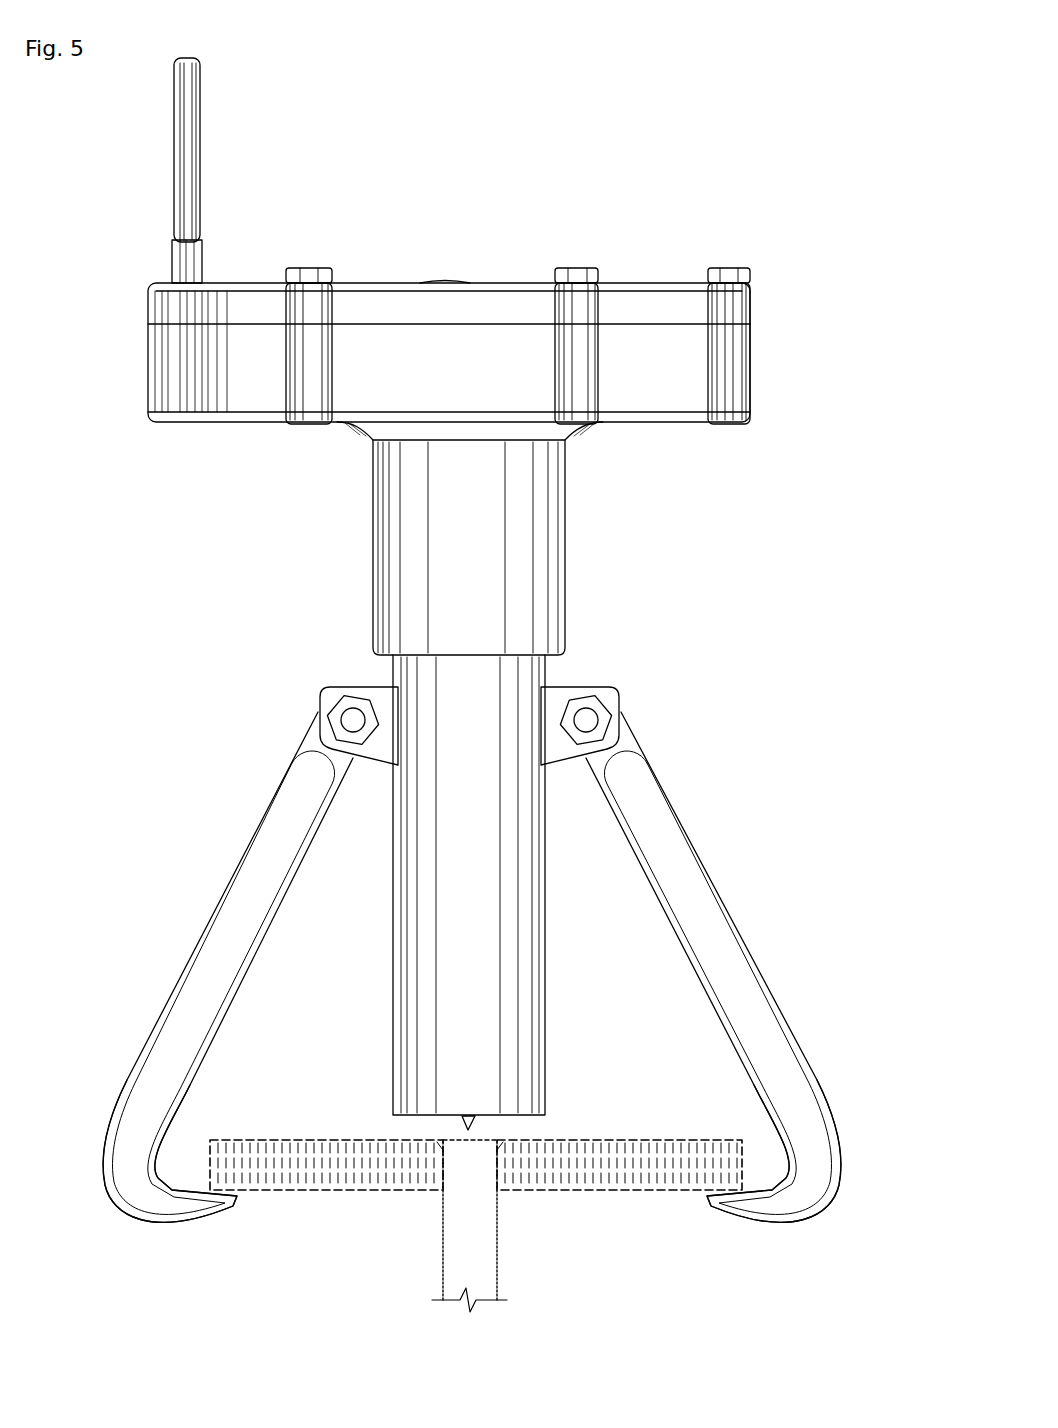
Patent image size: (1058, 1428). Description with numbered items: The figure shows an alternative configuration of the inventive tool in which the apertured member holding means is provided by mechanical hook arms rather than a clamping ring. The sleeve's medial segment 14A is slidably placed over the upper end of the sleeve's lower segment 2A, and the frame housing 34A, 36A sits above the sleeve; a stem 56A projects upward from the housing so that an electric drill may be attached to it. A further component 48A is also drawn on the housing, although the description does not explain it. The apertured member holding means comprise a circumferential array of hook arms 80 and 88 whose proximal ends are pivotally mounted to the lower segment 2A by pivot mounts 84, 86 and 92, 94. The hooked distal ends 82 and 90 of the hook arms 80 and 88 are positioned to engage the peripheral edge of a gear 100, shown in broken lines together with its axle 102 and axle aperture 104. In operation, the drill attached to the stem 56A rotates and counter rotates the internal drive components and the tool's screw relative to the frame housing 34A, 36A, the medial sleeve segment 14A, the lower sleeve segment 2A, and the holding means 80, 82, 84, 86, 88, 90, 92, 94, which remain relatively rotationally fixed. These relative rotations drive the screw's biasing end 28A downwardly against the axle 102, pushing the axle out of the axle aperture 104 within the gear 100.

The stem 56A is at (195, 255).
The frame housing 36A is at (405, 300).
The fastener 48A is at (578, 270).
The frame housing 34A is at (640, 380).
The medial sleeve segment 14A is at (397, 513).
The lower sleeve segment 2A is at (532, 880).
The biasing end of screw 28A is at (478, 1123).
The pivot mount 92 is at (328, 693).
The pivot mount 94 is at (352, 712).
The pivot mount 84 is at (560, 692).
The pivot mount 86 is at (587, 717).
The hook arm 88 is at (235, 930).
The hook arm 80 is at (705, 904).
The hooked distal end 90 is at (197, 1188).
The hooked distal end 82 is at (760, 1187).
The gear 100 is at (370, 1178).
The axle 102 is at (477, 1173).
The axle aperture 104 is at (500, 1165).